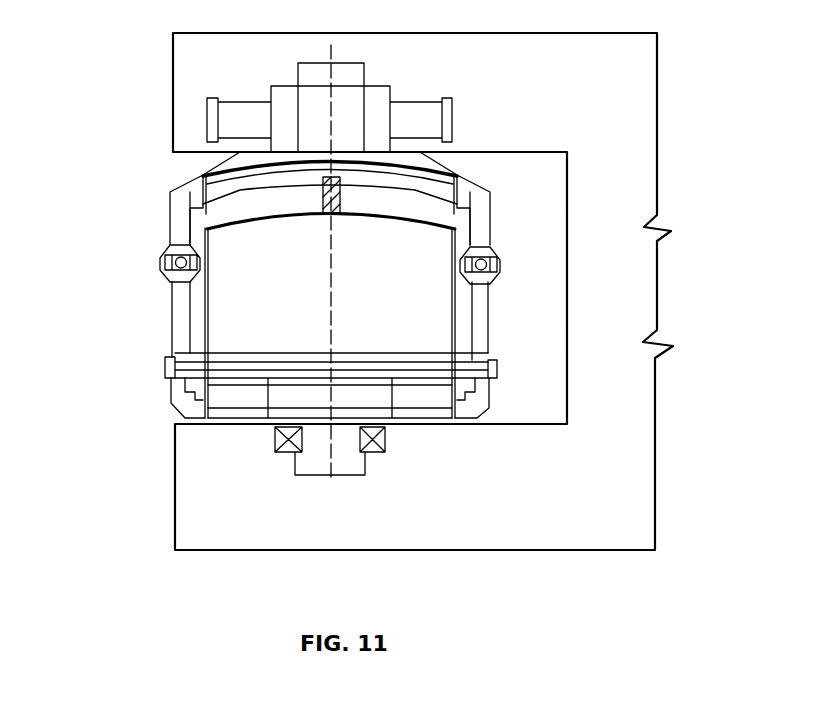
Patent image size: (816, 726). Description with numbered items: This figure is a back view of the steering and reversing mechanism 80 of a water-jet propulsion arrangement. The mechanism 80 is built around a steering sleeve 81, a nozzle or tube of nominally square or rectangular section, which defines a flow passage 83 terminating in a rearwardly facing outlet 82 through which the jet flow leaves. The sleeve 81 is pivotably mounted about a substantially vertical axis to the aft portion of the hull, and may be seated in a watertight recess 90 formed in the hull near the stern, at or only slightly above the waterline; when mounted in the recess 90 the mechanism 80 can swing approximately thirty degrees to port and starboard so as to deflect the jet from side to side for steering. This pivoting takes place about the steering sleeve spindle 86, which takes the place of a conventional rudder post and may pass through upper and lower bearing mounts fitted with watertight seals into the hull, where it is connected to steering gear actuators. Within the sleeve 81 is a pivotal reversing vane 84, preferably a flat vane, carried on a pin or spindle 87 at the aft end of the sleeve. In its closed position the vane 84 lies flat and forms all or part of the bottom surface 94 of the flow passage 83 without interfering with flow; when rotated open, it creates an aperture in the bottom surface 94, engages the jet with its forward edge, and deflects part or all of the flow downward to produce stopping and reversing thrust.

The steering and reversing mechanism 80 is at (121, 322).
The steering sleeve 81 is at (213, 215).
The rearwardly facing outlet 82 is at (437, 243).
The flow passage 83 is at (400, 282).
The pivotal reversing vane 84 is at (393, 357).
The steering sleeve spindle 86 is at (366, 72).
The pin or spindle 87 is at (497, 366).
The watertight recess 90 is at (513, 165).
The bottom surface 94 is at (249, 352).